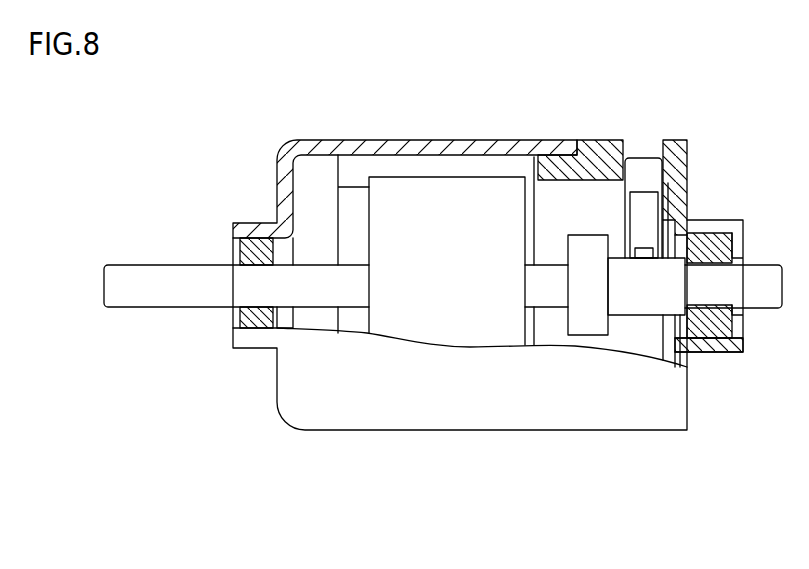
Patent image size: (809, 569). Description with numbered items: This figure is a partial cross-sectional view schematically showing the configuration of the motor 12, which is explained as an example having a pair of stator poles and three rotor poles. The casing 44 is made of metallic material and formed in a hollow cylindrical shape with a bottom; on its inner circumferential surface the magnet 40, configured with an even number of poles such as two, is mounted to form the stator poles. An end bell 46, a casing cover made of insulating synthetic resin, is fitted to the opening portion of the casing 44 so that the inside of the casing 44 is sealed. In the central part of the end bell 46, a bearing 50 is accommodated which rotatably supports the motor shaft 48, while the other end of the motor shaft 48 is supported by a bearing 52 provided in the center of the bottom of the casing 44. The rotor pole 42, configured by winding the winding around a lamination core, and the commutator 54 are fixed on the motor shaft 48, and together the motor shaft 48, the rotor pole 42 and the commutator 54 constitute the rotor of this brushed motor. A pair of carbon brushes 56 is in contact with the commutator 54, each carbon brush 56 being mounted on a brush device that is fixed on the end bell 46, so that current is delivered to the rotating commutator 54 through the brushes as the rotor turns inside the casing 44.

The motor 12 is at (430, 550).
The magnet 40 is at (355, 166).
The rotor pole 42 is at (448, 313).
The casing 44 is at (530, 145).
The end bell 46 is at (675, 148).
The motor shaft 48 is at (172, 273).
The bearing 50 is at (713, 237).
The bearing 52 is at (258, 248).
The commutator 54 is at (653, 293).
The carbon brush 56 is at (643, 260).